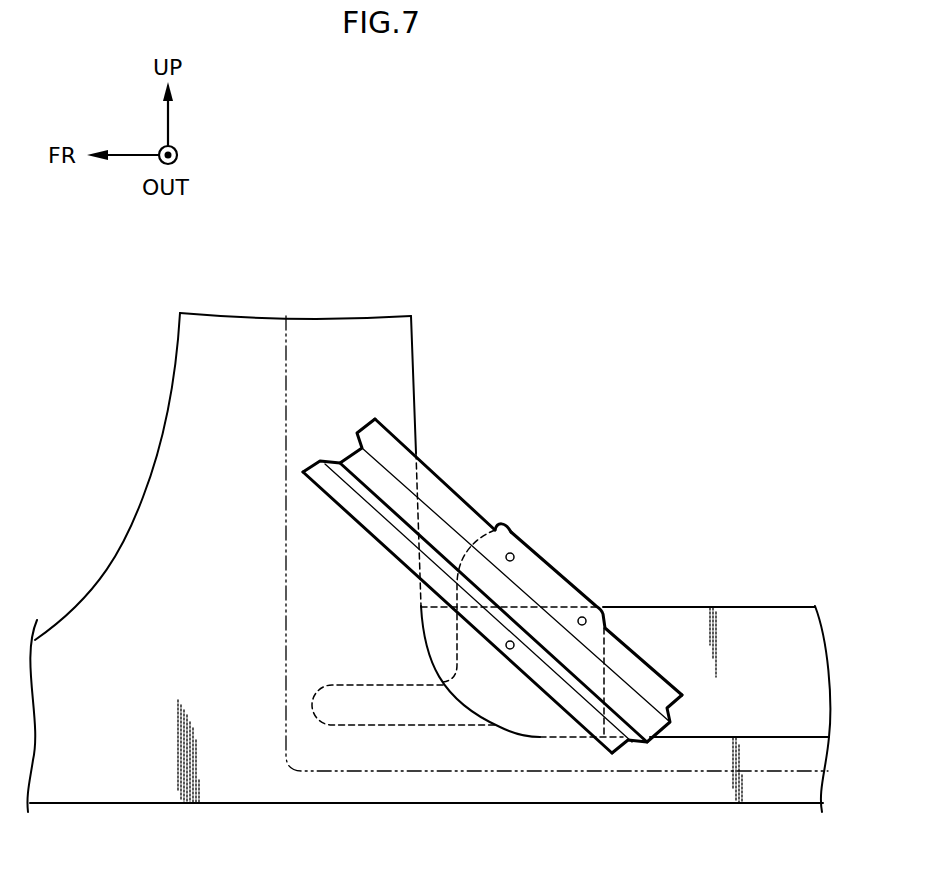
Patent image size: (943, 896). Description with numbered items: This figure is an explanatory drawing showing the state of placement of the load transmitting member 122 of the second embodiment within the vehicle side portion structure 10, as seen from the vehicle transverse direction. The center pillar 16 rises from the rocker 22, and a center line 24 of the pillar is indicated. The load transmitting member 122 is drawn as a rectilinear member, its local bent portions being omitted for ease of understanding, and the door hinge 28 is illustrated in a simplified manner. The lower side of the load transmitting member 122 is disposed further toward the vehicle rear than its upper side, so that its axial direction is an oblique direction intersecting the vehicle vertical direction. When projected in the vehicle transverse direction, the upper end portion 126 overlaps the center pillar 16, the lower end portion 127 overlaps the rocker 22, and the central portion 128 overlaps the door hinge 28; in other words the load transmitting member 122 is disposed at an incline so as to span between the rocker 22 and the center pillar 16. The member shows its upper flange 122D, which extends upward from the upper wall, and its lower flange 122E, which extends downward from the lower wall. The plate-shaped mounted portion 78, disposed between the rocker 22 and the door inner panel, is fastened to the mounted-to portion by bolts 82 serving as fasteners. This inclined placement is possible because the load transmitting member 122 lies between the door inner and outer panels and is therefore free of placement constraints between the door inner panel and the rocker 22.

The vehicle side portion structure 10 is at (634, 320).
The center pillar 16 is at (414, 337).
The rocker 22 is at (745, 603).
The pillar center line 24 is at (280, 447).
The door hinge 28 is at (462, 732).
The mounted portion 78 is at (545, 548).
The bolt 82 is at (511, 552).
The load transmitting member 122 is at (514, 610).
The upper flange 122D is at (386, 437).
The lower flange 122E is at (360, 514).
The upper end portion 126 is at (372, 428).
The lower end portion 127 is at (653, 727).
The central portion 128 is at (553, 590).